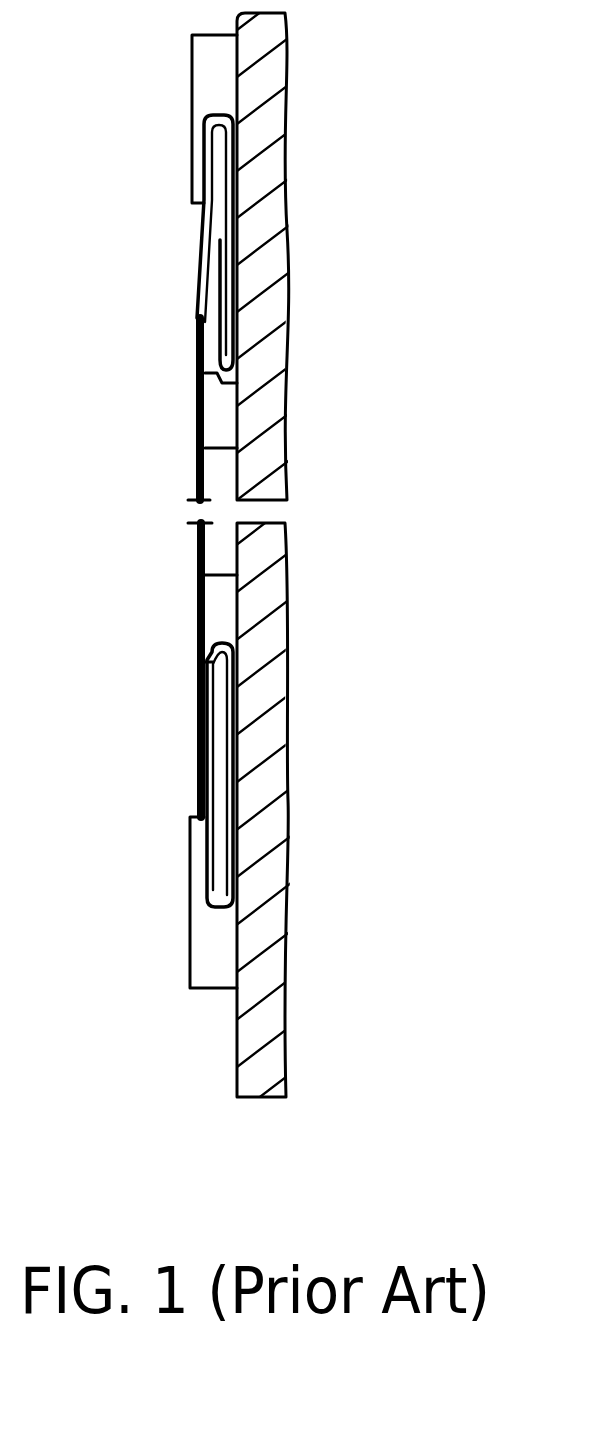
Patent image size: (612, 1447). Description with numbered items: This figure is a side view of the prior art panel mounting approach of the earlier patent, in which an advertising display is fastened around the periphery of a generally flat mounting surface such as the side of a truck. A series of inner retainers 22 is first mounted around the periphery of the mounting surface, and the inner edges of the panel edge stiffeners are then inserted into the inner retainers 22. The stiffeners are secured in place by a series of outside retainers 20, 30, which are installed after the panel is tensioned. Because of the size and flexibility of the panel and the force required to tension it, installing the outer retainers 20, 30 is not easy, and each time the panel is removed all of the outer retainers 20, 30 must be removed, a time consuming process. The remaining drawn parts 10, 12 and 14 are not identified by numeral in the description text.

The panel 10 is at (200, 463).
The upper spring clip 12 is at (222, 247).
The lower spring clip 14 is at (222, 786).
The outside retainer 20 is at (212, 109).
The inner retainer 22 is at (220, 403).
The outside retainer 30 is at (213, 950).